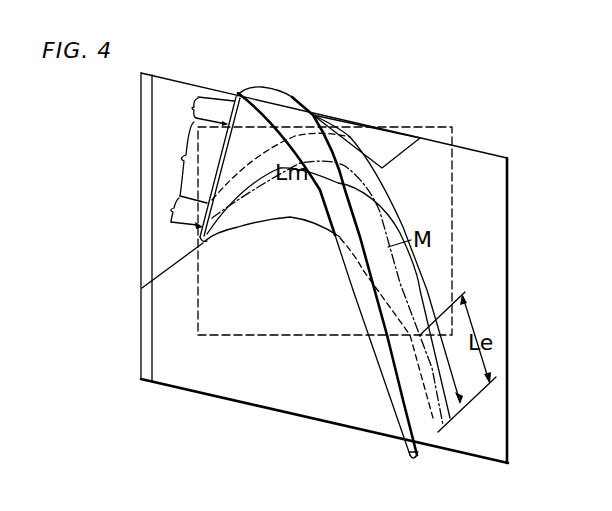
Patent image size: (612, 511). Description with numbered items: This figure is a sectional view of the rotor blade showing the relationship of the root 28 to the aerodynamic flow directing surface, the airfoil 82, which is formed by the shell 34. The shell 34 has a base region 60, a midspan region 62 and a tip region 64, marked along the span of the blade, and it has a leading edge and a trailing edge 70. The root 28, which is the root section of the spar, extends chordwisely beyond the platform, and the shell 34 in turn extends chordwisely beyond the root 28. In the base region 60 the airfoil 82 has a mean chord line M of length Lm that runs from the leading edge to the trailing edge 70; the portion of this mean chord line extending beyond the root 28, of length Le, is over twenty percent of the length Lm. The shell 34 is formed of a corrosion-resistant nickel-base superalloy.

The root 28 is at (428, 128).
The shell 34 is at (430, 419).
The base region 60 is at (179, 213).
The midspan region 62 is at (184, 162).
The tip region 64 is at (204, 110).
The trailing edge 70 is at (420, 453).
The airfoil 82 is at (293, 86).